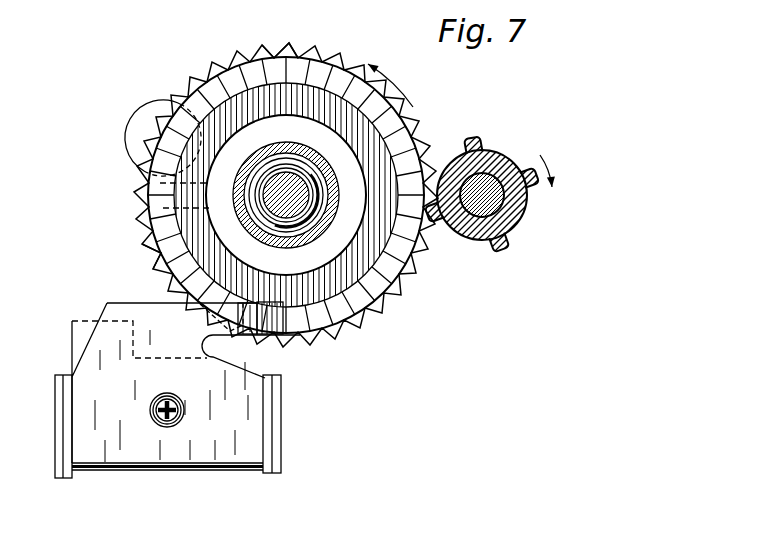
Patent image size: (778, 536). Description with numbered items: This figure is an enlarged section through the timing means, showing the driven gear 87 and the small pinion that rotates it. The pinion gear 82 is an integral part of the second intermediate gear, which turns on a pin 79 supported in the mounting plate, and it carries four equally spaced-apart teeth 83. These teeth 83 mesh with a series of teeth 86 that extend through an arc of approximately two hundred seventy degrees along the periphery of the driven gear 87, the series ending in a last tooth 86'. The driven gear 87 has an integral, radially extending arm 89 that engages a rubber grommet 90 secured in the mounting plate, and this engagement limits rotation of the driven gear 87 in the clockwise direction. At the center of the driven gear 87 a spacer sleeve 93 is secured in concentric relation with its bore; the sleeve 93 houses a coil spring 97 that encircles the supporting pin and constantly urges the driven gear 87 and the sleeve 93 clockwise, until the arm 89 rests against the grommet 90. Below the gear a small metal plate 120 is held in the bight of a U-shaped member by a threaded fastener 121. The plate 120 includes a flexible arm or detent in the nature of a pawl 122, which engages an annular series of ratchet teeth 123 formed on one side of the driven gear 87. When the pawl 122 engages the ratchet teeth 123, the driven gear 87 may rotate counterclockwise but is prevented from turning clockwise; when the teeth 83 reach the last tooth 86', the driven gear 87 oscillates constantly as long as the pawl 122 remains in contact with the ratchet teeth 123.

The pin 79 is at (498, 202).
The pinion gear 82 is at (489, 194).
The teeth 83 is at (477, 150).
The teeth 86 is at (289, 195).
The last tooth 86' is at (287, 34).
The driven gear 87 is at (378, 148).
The arm 89 is at (160, 228).
The rubber grommet 90 is at (140, 132).
The spacer sleeve 93 is at (297, 148).
The coil spring 97 is at (283, 226).
The metal plate 120 is at (243, 397).
The threaded fastener 121 is at (167, 428).
The pawl 122 is at (296, 337).
The ratchet teeth 123 is at (158, 261).